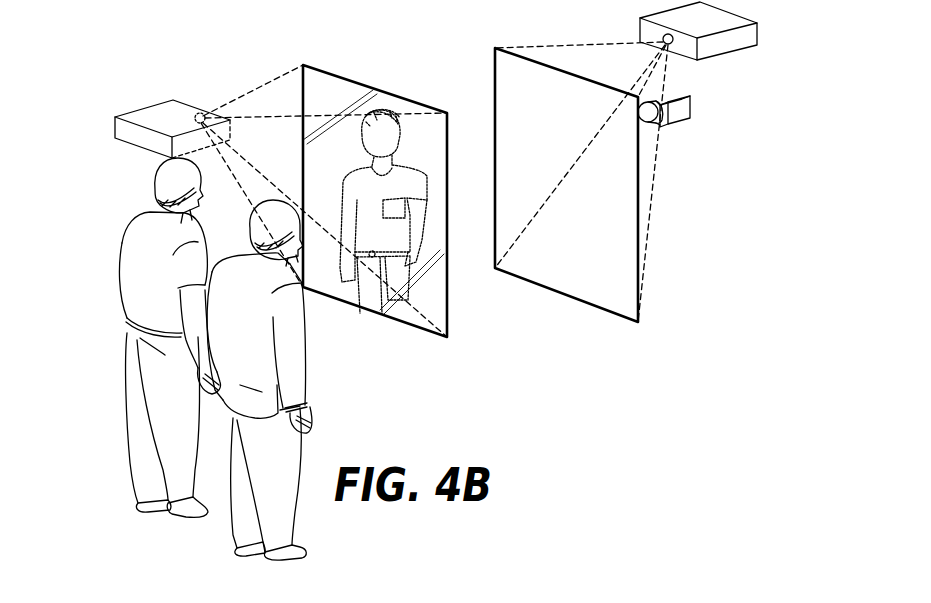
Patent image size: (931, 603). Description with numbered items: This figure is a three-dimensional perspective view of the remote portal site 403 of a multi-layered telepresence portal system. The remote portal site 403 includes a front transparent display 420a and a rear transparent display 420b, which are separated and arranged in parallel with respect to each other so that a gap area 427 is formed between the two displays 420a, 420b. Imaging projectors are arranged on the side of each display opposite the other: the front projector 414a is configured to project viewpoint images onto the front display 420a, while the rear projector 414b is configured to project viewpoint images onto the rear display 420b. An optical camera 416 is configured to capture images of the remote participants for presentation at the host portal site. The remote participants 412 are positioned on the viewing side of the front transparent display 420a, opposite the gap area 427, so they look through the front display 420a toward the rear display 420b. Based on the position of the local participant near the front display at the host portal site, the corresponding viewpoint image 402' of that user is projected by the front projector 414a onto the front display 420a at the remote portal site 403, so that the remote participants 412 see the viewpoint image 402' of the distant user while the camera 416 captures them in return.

The remote portal site 403 is at (161, 43).
The front projector 414a is at (116, 125).
The gap area 427 is at (447, 75).
The viewpoint image 402' is at (375, 212).
The front transparent display 420a is at (428, 335).
The remote participants 412 is at (198, 523).
The rear projector 414b is at (757, 32).
The optical camera 416 is at (690, 108).
The rear transparent display 420b is at (568, 297).